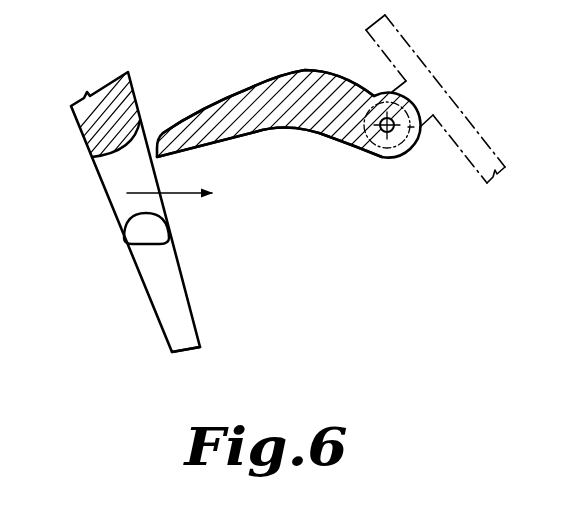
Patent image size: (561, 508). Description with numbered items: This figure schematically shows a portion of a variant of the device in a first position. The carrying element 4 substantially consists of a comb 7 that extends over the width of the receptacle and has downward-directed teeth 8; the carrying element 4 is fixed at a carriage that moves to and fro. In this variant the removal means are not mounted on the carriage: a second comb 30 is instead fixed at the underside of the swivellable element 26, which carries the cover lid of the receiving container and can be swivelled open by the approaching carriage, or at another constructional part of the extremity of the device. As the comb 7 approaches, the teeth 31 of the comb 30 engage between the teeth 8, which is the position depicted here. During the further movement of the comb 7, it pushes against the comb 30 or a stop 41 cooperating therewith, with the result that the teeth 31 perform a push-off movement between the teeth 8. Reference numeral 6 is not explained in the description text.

The carrying element 4 is at (148, 300).
The opening 6 is at (137, 233).
The comb 7 is at (112, 175).
The teeth 8 is at (188, 333).
The swivellable element 26 is at (481, 160).
The comb 30 is at (250, 86).
The teeth 31 is at (308, 123).
The stop 41 is at (328, 72).